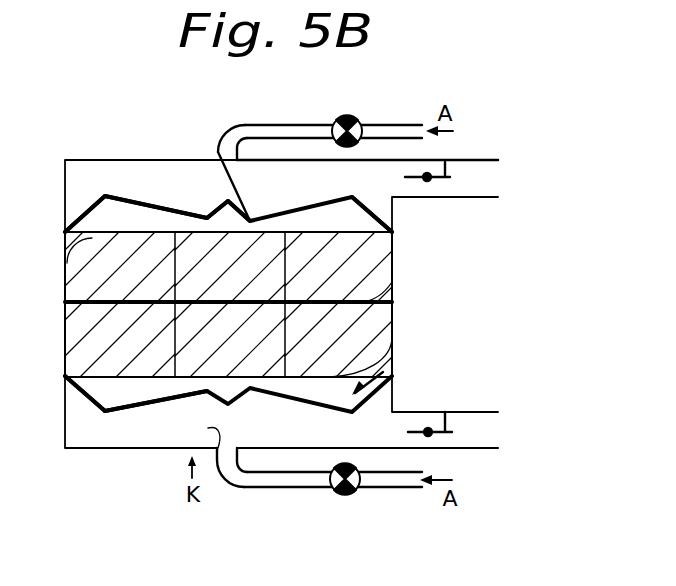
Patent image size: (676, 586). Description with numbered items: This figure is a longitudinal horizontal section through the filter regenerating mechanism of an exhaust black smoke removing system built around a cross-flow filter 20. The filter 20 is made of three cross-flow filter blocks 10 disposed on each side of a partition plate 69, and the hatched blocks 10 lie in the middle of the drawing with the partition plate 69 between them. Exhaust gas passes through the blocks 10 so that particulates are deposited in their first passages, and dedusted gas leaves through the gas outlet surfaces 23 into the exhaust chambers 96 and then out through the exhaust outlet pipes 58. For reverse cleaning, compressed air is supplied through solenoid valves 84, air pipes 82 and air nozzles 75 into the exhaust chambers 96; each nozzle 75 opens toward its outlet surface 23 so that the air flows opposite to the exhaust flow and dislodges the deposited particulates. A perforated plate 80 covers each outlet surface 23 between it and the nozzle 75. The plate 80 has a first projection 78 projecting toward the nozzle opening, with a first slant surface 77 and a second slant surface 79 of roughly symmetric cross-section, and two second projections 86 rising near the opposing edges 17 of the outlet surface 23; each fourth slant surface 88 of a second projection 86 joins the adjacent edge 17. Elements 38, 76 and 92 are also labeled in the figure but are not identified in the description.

The cross-flow filter block 10 is at (183, 281).
The edge of the outlet surface 17 is at (65, 232).
The filter 20 is at (228, 304).
The gas outlet surface 23 is at (65, 267).
The upper housing 38 is at (105, 160).
The exhaust outlet pipe 58 is at (485, 450).
The partition plate 69 is at (392, 282).
The air nozzle 75 is at (218, 148).
The gap 76 is at (208, 428).
The first slant surface 77 is at (217, 158).
The first projection 78 is at (207, 218).
The second slant surface 79 is at (228, 201).
The perforated plate 80 is at (392, 365).
The air pipe 82 is at (270, 125).
The solenoid valve 84 is at (347, 117).
The second projection 86 is at (105, 196).
The fourth slant surface 88 is at (93, 408).
The sensor 92 is at (448, 162).
The exhaust chamber 96 is at (266, 195).